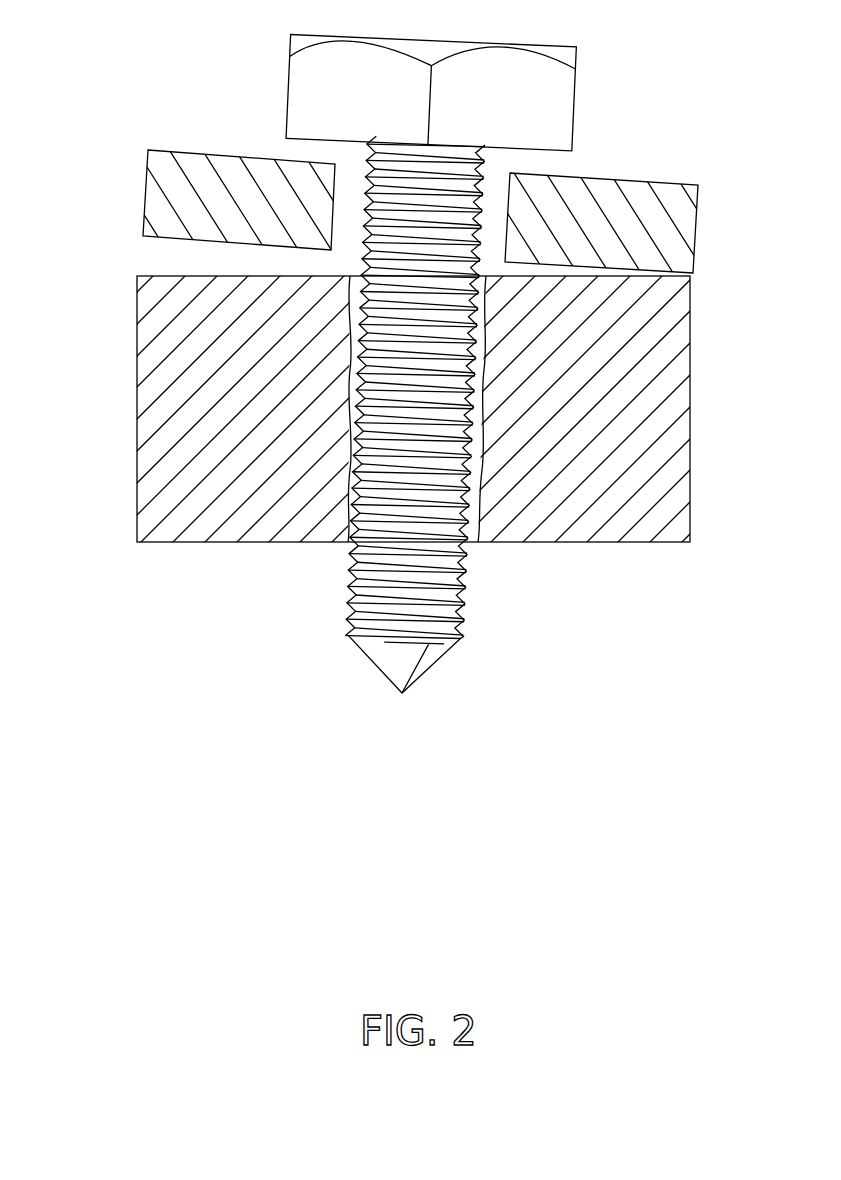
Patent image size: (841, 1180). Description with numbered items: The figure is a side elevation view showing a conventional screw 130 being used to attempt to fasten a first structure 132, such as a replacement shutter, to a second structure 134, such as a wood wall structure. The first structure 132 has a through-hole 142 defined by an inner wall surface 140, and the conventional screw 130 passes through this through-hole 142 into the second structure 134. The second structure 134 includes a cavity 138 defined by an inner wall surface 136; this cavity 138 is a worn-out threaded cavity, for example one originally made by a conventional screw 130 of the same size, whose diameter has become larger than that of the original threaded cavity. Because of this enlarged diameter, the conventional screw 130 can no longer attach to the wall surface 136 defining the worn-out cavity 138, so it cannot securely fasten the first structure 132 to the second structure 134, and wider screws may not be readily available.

The conventional screw 130 is at (270, 58).
The first structure 132 is at (153, 191).
The second structure 134 is at (145, 410).
The inner wall surface 136 is at (475, 518).
The cavity 138 is at (350, 282).
The inner wall surface 140 is at (507, 186).
The through-hole 142 is at (351, 176).